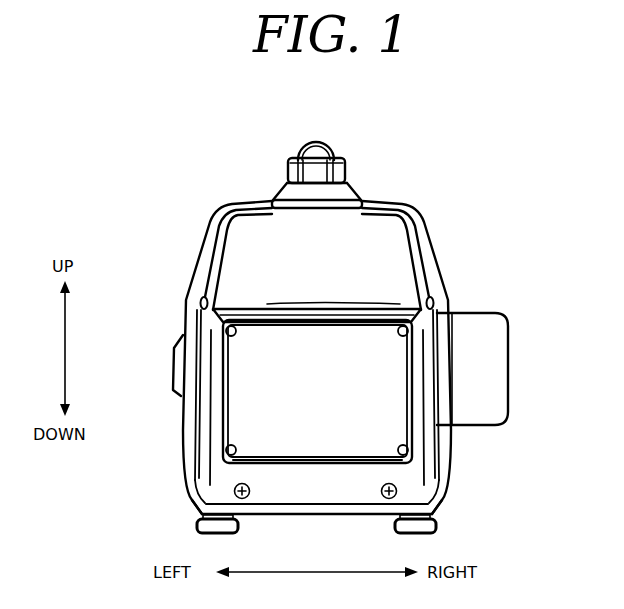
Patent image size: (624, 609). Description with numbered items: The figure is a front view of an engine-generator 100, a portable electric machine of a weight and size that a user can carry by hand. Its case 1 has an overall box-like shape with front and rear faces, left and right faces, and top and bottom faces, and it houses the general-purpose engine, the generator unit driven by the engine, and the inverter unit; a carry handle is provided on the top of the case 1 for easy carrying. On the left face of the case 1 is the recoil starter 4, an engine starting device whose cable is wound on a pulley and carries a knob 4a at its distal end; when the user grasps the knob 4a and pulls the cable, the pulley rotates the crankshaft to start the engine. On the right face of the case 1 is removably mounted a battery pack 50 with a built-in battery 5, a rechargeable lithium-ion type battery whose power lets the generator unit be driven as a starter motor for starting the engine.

The engine-generator 100 is at (450, 134).
The case 1 is at (438, 259).
The recoil starter 4 is at (178, 453).
The knob 4a is at (191, 462).
The battery pack 50 is at (512, 332).
The battery 5 is at (508, 357).